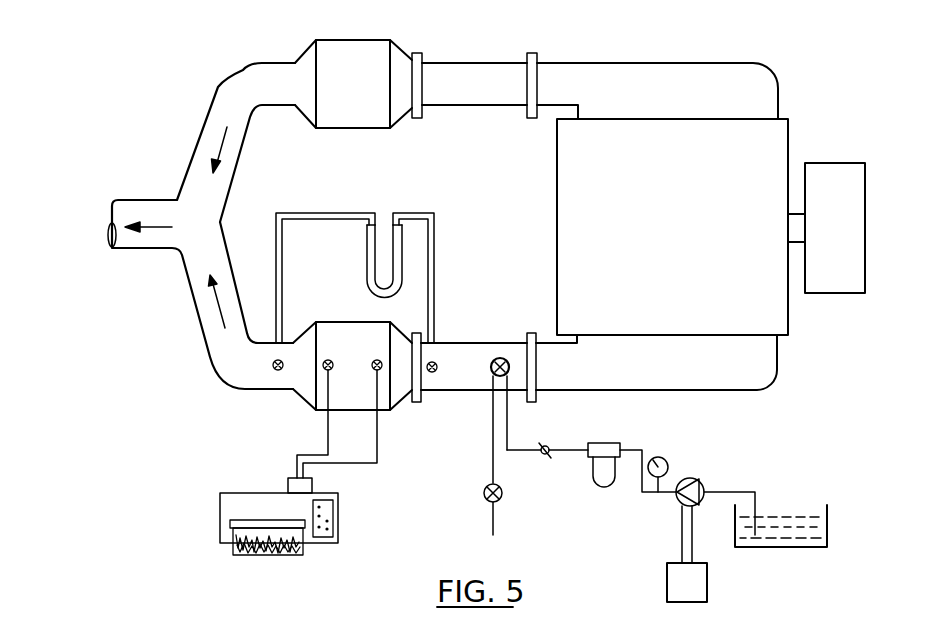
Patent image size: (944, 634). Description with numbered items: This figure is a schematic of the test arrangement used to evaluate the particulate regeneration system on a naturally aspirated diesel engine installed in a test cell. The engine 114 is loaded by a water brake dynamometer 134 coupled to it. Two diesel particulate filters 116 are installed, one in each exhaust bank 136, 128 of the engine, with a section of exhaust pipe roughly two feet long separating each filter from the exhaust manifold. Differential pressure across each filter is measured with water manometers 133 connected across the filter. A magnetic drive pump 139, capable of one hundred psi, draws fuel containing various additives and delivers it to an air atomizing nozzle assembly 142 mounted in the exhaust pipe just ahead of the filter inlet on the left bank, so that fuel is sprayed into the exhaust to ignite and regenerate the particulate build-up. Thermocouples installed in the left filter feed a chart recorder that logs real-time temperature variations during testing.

The engine 114 is at (768, 153).
The diesel particulate filter 116 is at (395, 57).
The exhaust line to engine (lower) 128 is at (593, 368).
The water manometer 133 is at (367, 253).
The water brake dynamometer 134 is at (838, 273).
The exhaust bank 136 is at (733, 82).
The magnetic drive pump 139 is at (690, 477).
The air atomizing nozzle assembly 142 is at (493, 355).